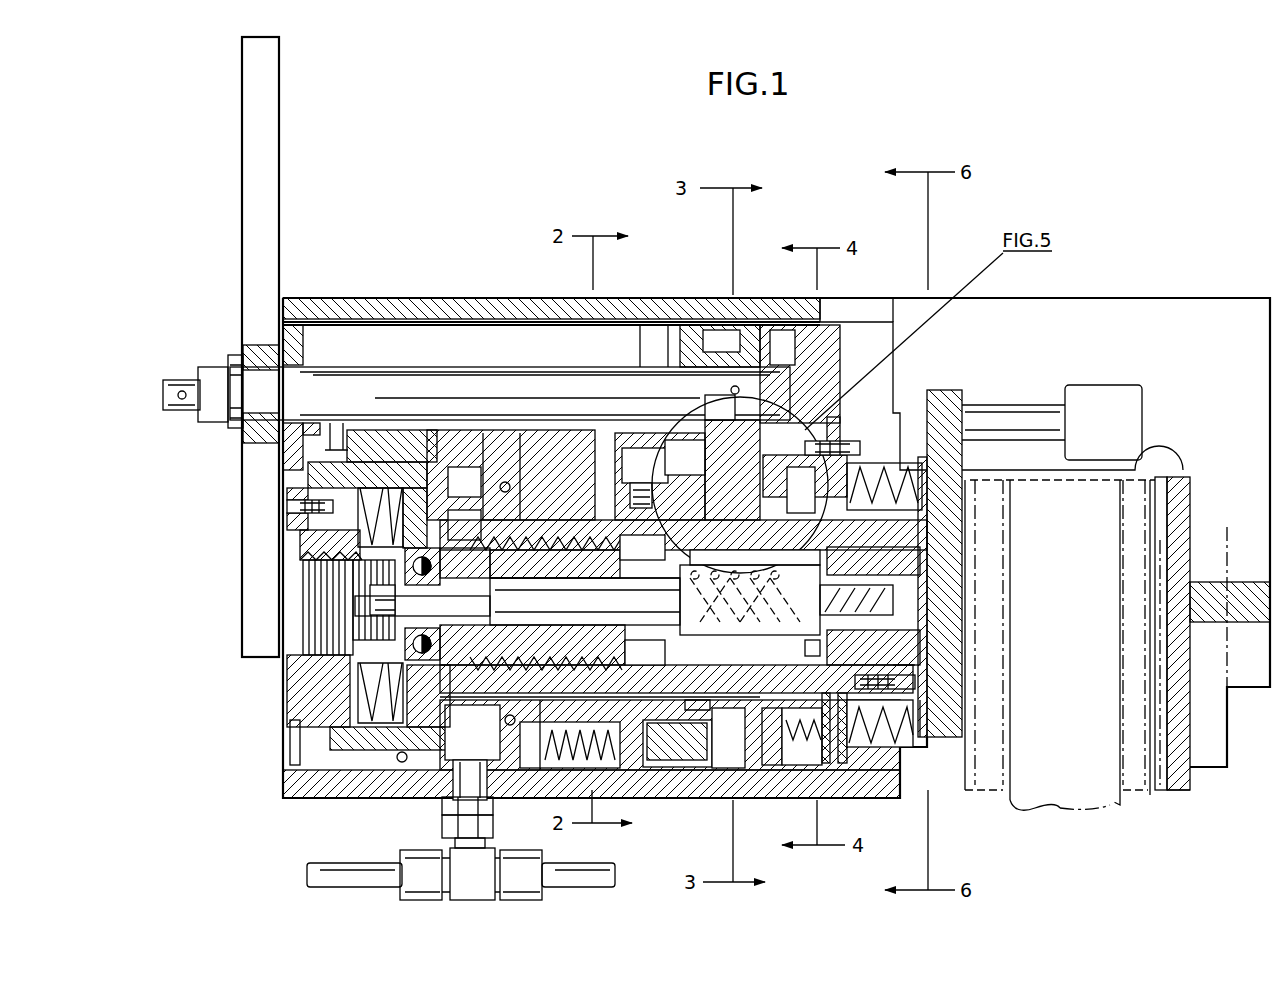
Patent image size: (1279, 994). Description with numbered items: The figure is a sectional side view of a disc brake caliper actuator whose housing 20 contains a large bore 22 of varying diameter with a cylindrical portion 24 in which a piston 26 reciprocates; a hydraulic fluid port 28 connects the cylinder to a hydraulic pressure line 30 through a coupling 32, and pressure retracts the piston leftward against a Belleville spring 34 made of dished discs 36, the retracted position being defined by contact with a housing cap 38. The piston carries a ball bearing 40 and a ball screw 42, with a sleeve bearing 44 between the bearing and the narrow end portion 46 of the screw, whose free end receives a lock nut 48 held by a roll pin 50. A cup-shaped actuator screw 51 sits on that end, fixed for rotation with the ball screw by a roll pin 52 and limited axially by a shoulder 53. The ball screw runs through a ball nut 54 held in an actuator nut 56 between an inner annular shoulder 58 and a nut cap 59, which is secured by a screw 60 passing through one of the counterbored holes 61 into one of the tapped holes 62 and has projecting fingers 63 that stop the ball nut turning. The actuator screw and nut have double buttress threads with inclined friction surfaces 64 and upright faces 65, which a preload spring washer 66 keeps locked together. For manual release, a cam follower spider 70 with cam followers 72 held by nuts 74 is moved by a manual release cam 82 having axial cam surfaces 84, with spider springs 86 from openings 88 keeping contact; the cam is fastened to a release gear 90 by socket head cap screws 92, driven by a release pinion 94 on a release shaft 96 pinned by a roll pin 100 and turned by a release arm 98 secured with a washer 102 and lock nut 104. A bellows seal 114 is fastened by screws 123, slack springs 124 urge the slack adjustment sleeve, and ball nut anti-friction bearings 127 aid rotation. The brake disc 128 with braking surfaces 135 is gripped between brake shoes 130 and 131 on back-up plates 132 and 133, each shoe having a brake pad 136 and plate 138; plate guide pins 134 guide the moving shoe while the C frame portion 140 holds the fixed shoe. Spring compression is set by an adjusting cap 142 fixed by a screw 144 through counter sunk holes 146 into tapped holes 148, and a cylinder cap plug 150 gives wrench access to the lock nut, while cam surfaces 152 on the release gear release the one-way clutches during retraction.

The housing 20 is at (548, 335).
The large bore 22 is at (582, 440).
The cylindrical portion (cylinder) 24 is at (448, 345).
The piston 26 is at (380, 440).
The hydraulic fluid port 28 is at (462, 758).
The hydraulic pressure line 30 is at (375, 865).
The coupling 32 is at (440, 823).
The Belleville spring 34 is at (305, 752).
The discs 36 is at (345, 670).
The housing cap 38 is at (320, 720).
The ball bearing 40 is at (425, 437).
The ball screw 42 is at (530, 450).
The sleeve bearing 44 is at (405, 585).
The narrow end portion 46 is at (355, 625).
The lock nut 48 is at (370, 596).
The roll pin 50 is at (365, 612).
The actuator screw 51 is at (480, 445).
The roll pin 52 is at (462, 560).
The shoulder 53 is at (482, 512).
The ball nut 54 is at (762, 765).
The actuator nut 56 is at (742, 718).
The inner annular shoulder 58 is at (665, 660).
The actuator nut cap 59 is at (890, 590).
The screw 60 is at (893, 672).
The counterbored holes 61 is at (920, 690).
The tapped holes 62 is at (935, 700).
The projecting fingers 63 is at (805, 648).
The friction surfaces 64 is at (683, 549).
The upright opposite faces 65 is at (585, 572).
The preload spring washer 66 is at (640, 600).
The cam follower spider 70 is at (615, 330).
The cam followers 72 is at (645, 350).
The nuts 74 is at (665, 355).
The manual release cam 82 is at (688, 350).
The axial cam surfaces 84 is at (650, 450).
The spider springs 86 is at (600, 780).
The openings 88 is at (560, 783).
The release gear 90 is at (748, 385).
The socket head cap screws 92 is at (725, 445).
The release pinion 94 is at (722, 345).
The release shaft 96 is at (795, 345).
The release arm 98 is at (242, 178).
The roll pin 100 is at (752, 350).
The washer 102 is at (235, 350).
The lock nut 104 is at (215, 375).
The bellows seal 114 is at (855, 467).
The screws 123 is at (905, 440).
The slack springs 124 is at (840, 740).
The ball nut anti-friction bearings 127 is at (720, 615).
The brake disc 128 is at (1100, 810).
The brake shoe (moving) 130 is at (985, 785).
The brake shoe (fixed) 131 is at (1158, 795).
The back-up plate 132 is at (960, 712).
The back-up plate 133 is at (1185, 793).
The guide pins 134 is at (1020, 405).
The braking surface 135 is at (1133, 498).
The brake pad 136 is at (1142, 527).
The plate 138 is at (1160, 555).
The C frame portion 140 is at (1160, 312).
The adjusting cap 142 is at (310, 580).
The screw 144 is at (290, 515).
The counter sunk holes 146 is at (290, 495).
The tapped holes 148 is at (300, 505).
The cylinder cap plug 150 is at (370, 580).
The cam surfaces 152 is at (740, 485).